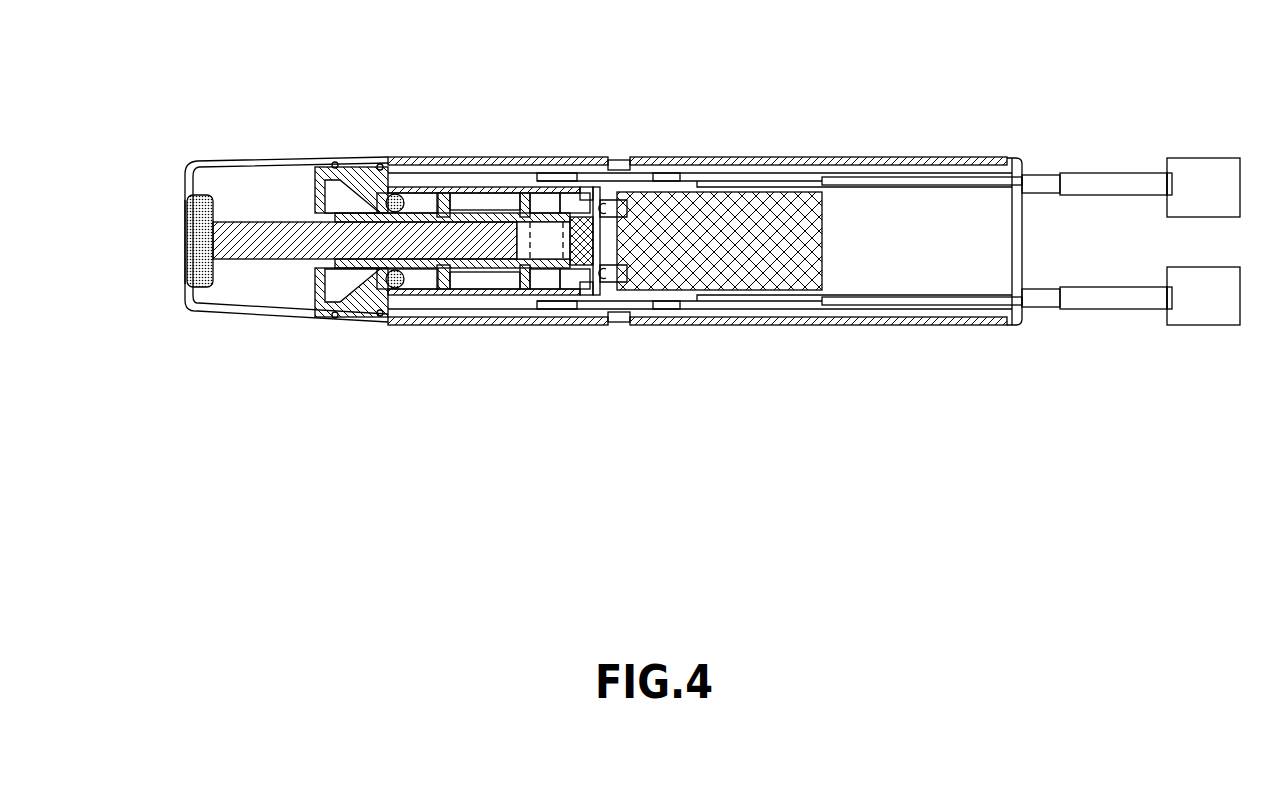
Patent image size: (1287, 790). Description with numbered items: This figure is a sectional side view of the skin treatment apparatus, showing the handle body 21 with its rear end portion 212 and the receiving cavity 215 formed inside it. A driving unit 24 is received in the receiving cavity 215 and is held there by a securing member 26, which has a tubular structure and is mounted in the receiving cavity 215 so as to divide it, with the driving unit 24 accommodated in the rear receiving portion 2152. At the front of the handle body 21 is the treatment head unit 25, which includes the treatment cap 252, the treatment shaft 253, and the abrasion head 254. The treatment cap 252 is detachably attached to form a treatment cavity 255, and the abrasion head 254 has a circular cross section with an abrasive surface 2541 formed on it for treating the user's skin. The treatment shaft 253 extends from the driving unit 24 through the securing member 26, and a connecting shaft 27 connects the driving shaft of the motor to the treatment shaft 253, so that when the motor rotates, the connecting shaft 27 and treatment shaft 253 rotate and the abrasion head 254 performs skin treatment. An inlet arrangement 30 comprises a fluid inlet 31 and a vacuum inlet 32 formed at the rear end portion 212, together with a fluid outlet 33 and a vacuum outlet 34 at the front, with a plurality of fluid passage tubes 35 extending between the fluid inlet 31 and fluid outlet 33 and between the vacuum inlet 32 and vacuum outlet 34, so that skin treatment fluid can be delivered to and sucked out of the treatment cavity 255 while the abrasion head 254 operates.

The handle body 21 is at (716, 158).
The rear end portion 212 is at (930, 155).
The receiving cavity 215 is at (960, 195).
The rear receiving portion 2152 is at (780, 186).
The driving unit 24 is at (800, 290).
The treatment head unit 25 is at (294, 170).
The treatment cap 252 is at (252, 164).
The treatment shaft 253 is at (383, 238).
The abrasion head 254 is at (203, 253).
The abrasive surface 2541 is at (178, 213).
The treatment cavity 255 is at (236, 299).
The securing member 26 is at (620, 174).
The connecting shaft 27 is at (418, 266).
The inlet arrangement 30 is at (1150, 157).
The fluid inlet 31 is at (1042, 169).
The vacuum inlet 32 is at (1042, 315).
The fluid outlet 33 is at (315, 187).
The vacuum outlet 34 is at (315, 307).
The fluid passage tubes 35 is at (540, 187).